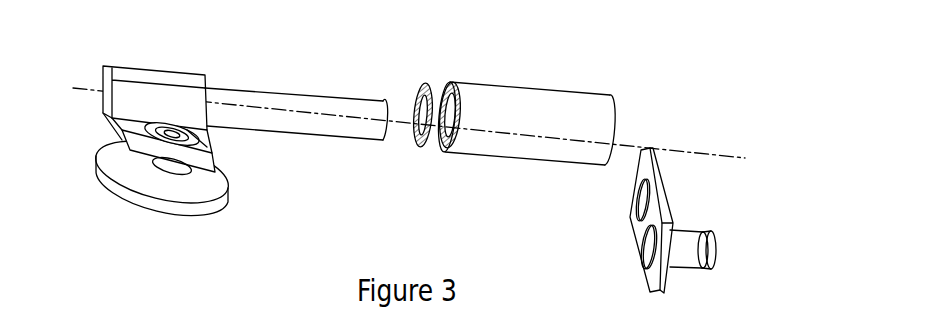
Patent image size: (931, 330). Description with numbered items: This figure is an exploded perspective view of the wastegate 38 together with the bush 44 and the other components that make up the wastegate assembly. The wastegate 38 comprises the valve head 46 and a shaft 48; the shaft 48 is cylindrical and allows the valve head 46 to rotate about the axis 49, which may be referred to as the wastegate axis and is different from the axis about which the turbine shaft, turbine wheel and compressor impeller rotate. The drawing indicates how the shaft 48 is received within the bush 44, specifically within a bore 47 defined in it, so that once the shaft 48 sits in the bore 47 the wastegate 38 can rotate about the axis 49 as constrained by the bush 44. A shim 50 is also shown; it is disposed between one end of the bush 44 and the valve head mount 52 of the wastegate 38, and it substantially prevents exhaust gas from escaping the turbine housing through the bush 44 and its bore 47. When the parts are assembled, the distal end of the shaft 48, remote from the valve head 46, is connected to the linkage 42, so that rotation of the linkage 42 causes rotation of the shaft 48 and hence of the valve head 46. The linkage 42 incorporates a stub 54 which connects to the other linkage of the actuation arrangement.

The wastegate 38 is at (297, 102).
The linkage 42 is at (665, 178).
The bush 44 is at (547, 117).
The valve head 46 is at (158, 203).
The bore 47 is at (442, 98).
The shaft 48 is at (320, 132).
The axis 49 is at (621, 141).
The shim 50 is at (417, 147).
The valve head mount 52 is at (219, 88).
The stub 54 is at (678, 228).